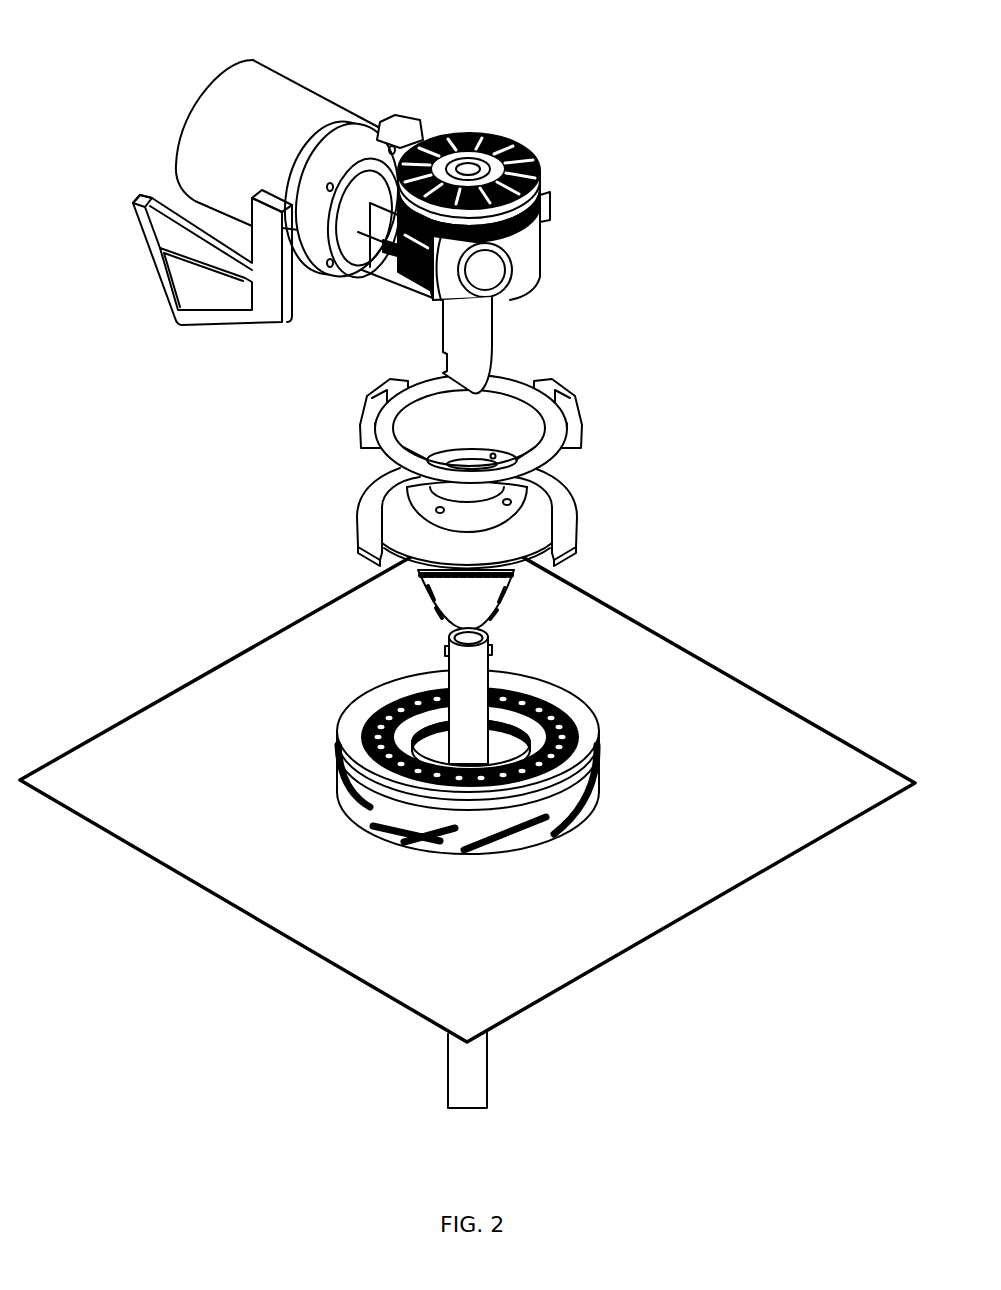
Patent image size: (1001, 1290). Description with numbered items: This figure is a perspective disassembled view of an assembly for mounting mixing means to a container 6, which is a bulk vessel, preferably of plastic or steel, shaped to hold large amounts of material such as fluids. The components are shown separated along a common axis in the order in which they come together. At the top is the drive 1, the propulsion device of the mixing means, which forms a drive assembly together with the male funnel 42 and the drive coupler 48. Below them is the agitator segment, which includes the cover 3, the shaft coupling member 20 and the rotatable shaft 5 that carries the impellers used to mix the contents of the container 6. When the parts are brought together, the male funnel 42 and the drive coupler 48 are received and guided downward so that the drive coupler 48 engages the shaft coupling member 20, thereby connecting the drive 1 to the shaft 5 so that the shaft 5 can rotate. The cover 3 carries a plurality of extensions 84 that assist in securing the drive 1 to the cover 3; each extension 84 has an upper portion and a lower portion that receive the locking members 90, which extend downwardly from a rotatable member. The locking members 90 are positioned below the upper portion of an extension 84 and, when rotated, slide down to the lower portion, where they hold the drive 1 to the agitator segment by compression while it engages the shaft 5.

The drive 1 is at (300, 107).
The drive coupler 48 is at (480, 331).
The locking members 90 is at (560, 498).
The male funnel 42 is at (493, 590).
The shaft coupling member 20 is at (462, 657).
The cover 3 is at (560, 700).
The extensions 84 is at (490, 855).
The container 6 is at (720, 778).
The shaft 5 is at (473, 1067).